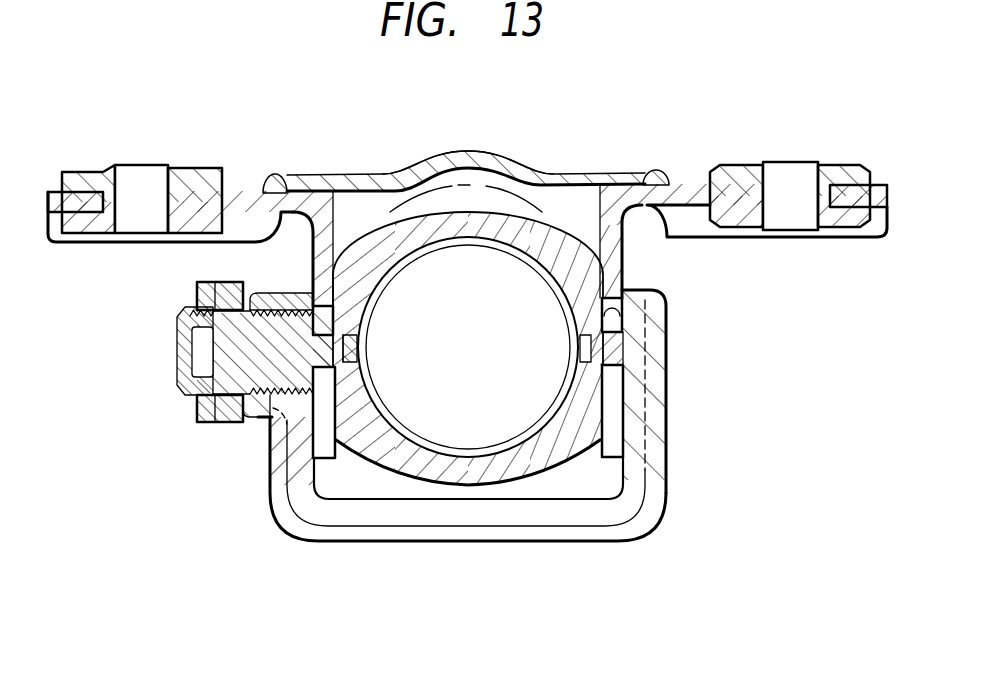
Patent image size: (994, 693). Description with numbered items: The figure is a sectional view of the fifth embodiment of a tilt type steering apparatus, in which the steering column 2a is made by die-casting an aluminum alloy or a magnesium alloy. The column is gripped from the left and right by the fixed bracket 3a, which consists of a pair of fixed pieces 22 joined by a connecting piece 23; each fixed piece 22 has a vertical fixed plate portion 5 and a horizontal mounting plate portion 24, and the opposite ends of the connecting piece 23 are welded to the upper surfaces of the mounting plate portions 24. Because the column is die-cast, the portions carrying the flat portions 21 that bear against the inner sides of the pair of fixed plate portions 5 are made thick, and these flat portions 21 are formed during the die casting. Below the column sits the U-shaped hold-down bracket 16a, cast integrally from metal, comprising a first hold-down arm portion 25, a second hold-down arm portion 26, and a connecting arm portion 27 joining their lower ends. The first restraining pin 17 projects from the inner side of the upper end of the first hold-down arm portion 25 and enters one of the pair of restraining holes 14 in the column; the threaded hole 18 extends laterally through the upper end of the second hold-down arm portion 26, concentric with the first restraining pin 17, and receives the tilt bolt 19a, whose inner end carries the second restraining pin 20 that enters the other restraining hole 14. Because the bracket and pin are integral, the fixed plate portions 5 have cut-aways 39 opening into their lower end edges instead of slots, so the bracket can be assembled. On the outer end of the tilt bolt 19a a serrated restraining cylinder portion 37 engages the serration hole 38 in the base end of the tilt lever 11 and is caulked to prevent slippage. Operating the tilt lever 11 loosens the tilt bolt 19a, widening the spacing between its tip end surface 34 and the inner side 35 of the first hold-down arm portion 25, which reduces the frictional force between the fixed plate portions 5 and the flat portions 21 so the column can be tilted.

The steering column 2a is at (550, 242).
The fixed bracket 3a is at (358, 156).
The fixed plate portions 5 is at (338, 232).
The tilt lever 11 is at (205, 403).
The restraining holes 14 is at (358, 350).
The hold-down bracket 16a is at (530, 516).
The first restraining pin 17 is at (594, 434).
The threaded hole 18 is at (250, 402).
The tilt bolt 19a is at (227, 435).
The second restraining pin 20 is at (352, 366).
The flat portions 21 is at (340, 273).
The fixed pieces 22 is at (200, 200).
The connecting piece 23 is at (482, 158).
The mounting plate portions 24 is at (248, 200).
The first hold-down arm portion 25 is at (650, 432).
The second hold-down arm portion 26 is at (288, 450).
The connecting arm portion 27 is at (443, 516).
The tip end surface 34 is at (337, 459).
The inner side 35 is at (640, 387).
The restraining cylinder portion 37 is at (180, 327).
The serration hole 38 is at (200, 360).
The cut-aways 39 is at (197, 295).